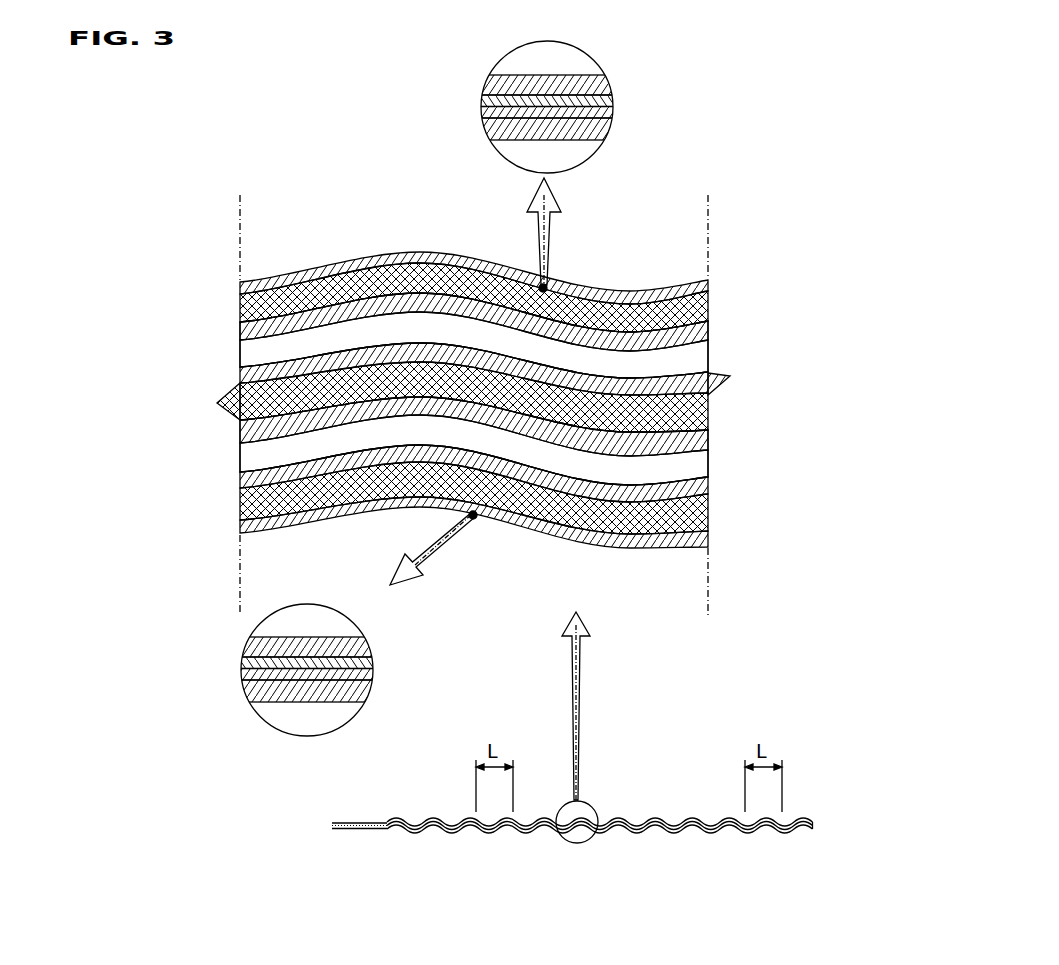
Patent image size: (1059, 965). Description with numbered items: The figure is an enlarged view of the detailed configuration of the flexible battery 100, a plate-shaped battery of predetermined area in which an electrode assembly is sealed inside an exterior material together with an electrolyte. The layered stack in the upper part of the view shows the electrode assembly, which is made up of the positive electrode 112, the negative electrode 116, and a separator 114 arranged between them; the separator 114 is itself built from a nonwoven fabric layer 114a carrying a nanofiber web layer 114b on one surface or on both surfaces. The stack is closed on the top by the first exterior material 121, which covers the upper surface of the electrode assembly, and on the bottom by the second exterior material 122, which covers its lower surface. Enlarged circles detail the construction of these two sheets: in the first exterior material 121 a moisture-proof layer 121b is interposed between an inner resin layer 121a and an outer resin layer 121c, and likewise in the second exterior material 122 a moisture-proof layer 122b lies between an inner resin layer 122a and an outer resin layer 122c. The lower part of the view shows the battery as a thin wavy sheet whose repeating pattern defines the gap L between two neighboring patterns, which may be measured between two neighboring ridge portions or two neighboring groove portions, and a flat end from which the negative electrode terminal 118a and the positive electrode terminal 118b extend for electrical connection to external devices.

The flexible battery 100 is at (391, 229).
The positive electrode 112 is at (240, 380).
The separator 114 is at (146, 322).
The nonwoven fabric layer 114a is at (240, 333).
The nanofiber web layer 114b is at (240, 356).
The negative electrode 116 is at (240, 310).
The negative electrode terminal 118a is at (362, 823).
The positive electrode terminal 118b is at (352, 831).
The first exterior material 121 is at (240, 288).
The inner resin layer 121a is at (606, 130).
The moisture-proof layer 121b is at (610, 110).
The outer resin layer 121c is at (606, 88).
The second exterior material 122 is at (713, 545).
The inner resin layer 122a is at (370, 646).
The moisture-proof layer 122b is at (372, 668).
The outer resin layer 122c is at (370, 690).